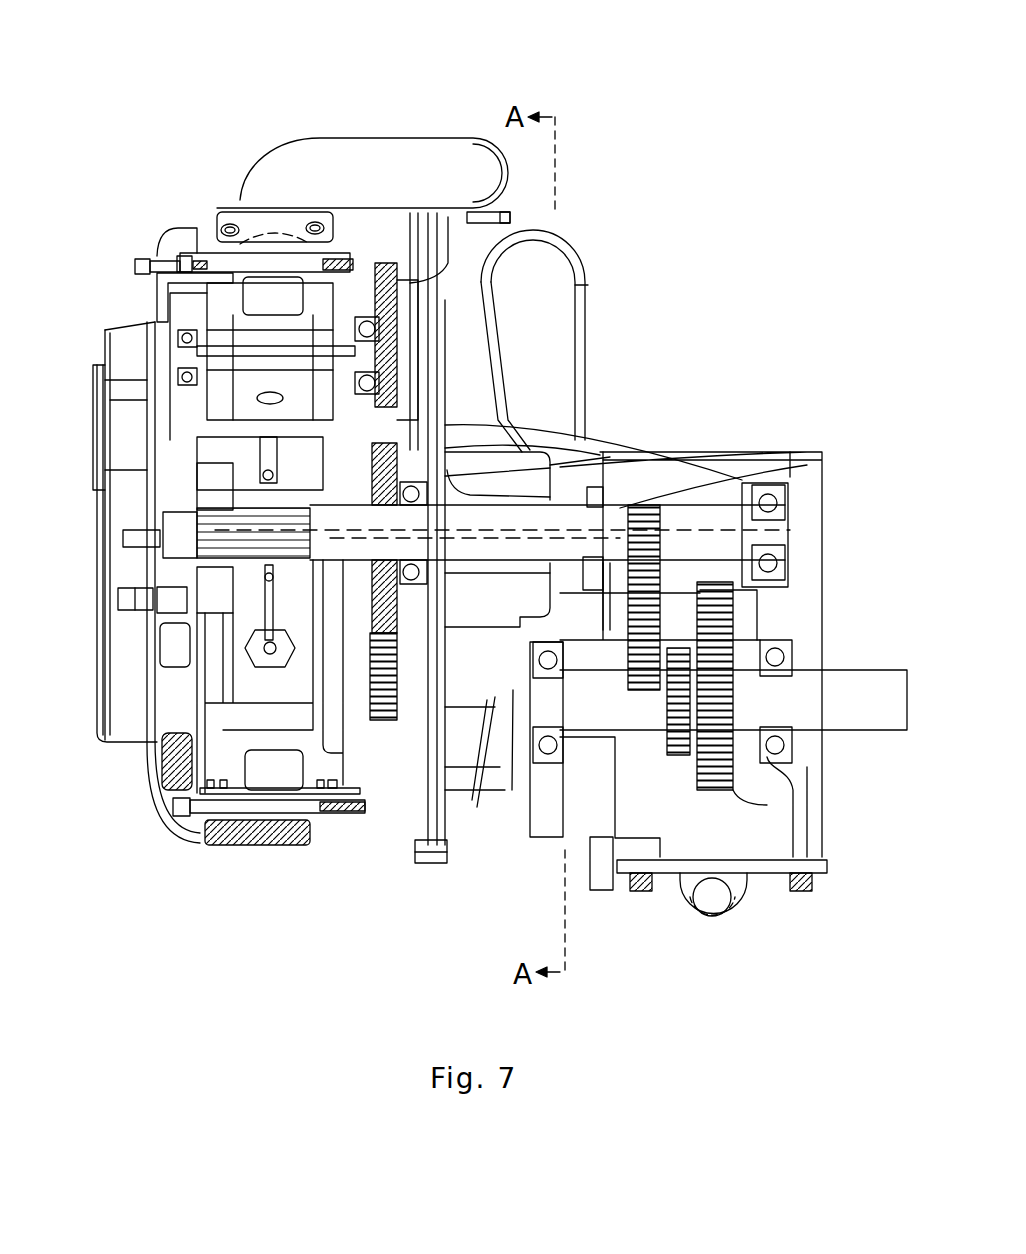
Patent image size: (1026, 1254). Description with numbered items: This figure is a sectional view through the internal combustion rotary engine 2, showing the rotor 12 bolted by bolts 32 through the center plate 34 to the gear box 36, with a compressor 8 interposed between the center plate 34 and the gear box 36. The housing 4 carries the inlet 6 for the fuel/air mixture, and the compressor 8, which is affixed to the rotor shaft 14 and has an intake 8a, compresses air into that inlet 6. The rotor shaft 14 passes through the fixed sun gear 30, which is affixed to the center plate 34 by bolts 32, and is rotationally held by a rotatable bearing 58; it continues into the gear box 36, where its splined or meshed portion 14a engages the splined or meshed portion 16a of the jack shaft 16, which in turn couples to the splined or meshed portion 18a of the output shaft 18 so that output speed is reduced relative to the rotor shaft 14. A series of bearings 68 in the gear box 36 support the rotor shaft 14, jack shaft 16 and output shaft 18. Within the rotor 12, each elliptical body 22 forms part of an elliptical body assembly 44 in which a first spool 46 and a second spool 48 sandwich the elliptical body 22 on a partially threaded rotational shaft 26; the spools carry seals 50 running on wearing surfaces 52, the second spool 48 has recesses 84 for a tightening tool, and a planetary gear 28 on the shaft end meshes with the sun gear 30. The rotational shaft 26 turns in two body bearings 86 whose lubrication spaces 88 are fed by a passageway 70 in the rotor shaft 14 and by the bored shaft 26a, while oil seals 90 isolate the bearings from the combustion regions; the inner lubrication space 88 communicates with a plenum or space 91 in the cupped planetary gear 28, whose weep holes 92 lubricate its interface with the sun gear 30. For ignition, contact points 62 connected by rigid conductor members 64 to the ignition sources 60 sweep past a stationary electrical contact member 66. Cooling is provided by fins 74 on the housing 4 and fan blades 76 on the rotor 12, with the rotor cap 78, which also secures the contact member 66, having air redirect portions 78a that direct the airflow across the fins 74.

The internal combustion rotary engine 2 is at (631, 176).
The housing 4 is at (272, 748).
The inlet 6 is at (500, 190).
The compressor 8 is at (598, 294).
The intake 8a is at (548, 308).
The rotor 12 is at (445, 420).
The rotor shaft 14 is at (795, 450).
The splined or meshed portion 14a is at (790, 488).
The jack shaft 16 is at (694, 625).
The splined or meshed portion 16a is at (770, 583).
The output shaft 18 is at (874, 716).
The splined or meshed portion 18a is at (735, 797).
The elliptical body 22 is at (157, 288).
The rotational shaft 26 is at (390, 372).
The bored shaft 26a is at (237, 225).
The planetary gear 28 is at (408, 275).
The fixed sun gear 30 is at (440, 445).
The bolts 32 is at (640, 455).
The center plate 34 is at (432, 858).
The gear box 36 is at (727, 443).
The elliptical body assembly 44 is at (105, 333).
The first spool 46 is at (340, 270).
The second spool 48 is at (210, 420).
The seal 50 is at (258, 332).
The wearing surface 52 is at (222, 280).
The rotatable bearing 58 is at (813, 445).
The ignition source 60 is at (290, 690).
The contact points 62 is at (150, 537).
The rigid conductor member 64 is at (130, 530).
The stationary electrical contact member 66 is at (190, 600).
The bearings 68 is at (785, 503).
The passageway 70 is at (475, 537).
The fins 74 is at (293, 845).
The fan blades 76 is at (175, 752).
The rotor cap 78 is at (108, 327).
The air redirect portions 78a is at (168, 228).
The recesses 84 is at (200, 404).
The body bearings 86 is at (200, 380).
The lubrication spaces 88 is at (180, 338).
The oil seals 90 is at (385, 290).
The plenum or space 91 is at (425, 280).
The weep holes 92 is at (370, 450).